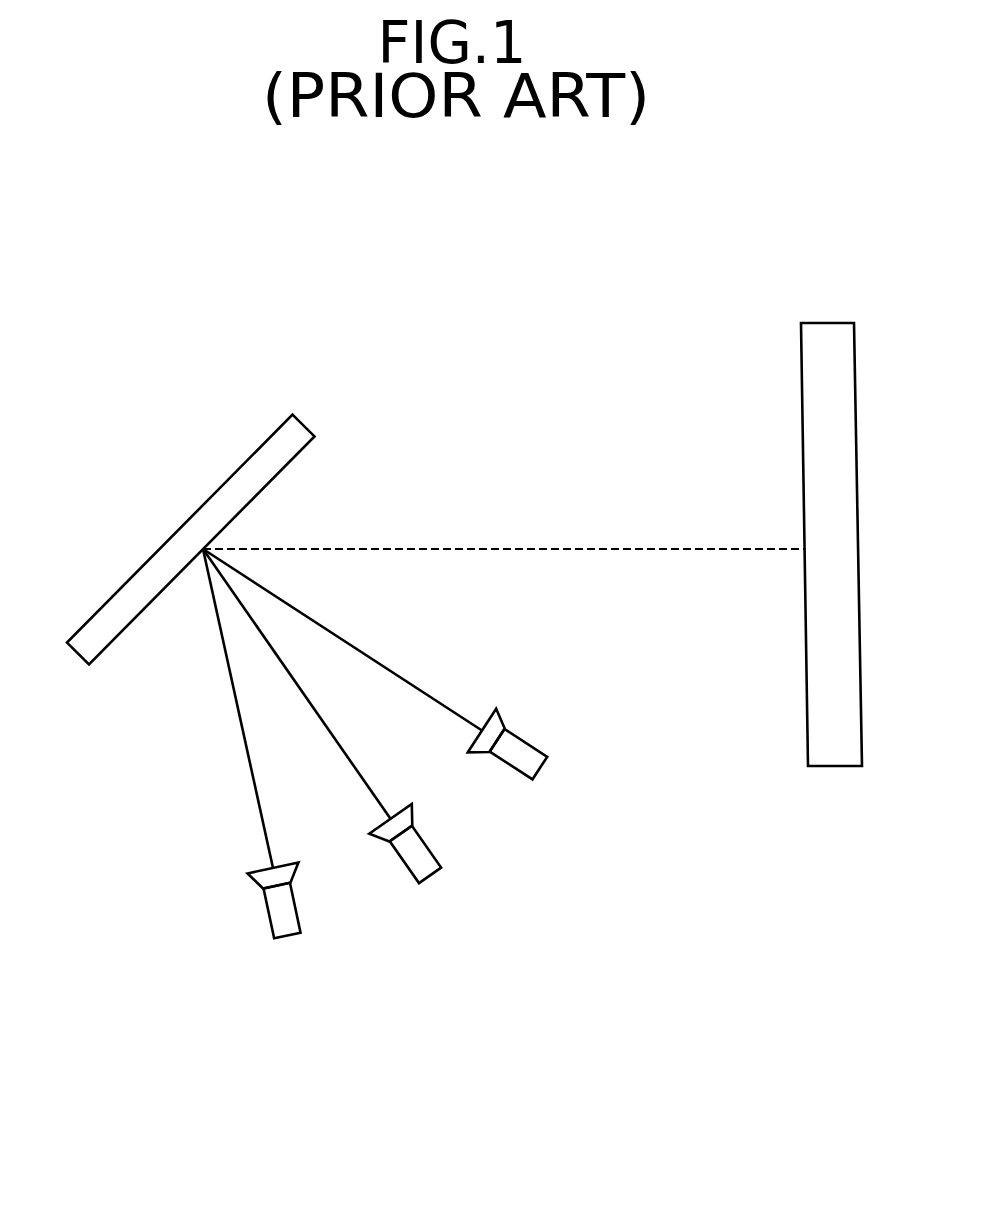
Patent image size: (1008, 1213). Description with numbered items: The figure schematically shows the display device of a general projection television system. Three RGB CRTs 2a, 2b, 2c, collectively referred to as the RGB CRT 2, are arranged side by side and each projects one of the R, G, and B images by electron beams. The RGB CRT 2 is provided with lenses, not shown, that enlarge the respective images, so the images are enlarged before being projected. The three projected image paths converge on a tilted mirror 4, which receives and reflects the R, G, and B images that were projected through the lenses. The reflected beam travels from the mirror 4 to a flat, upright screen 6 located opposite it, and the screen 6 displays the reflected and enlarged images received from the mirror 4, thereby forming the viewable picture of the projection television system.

The RGB CRT 2 is at (407, 935).
The RGB CRT 2a is at (290, 937).
The RGB CRT 2b is at (431, 877).
The RGB CRT 2c is at (542, 769).
The mirror 4 is at (305, 425).
The screen 6 is at (821, 323).